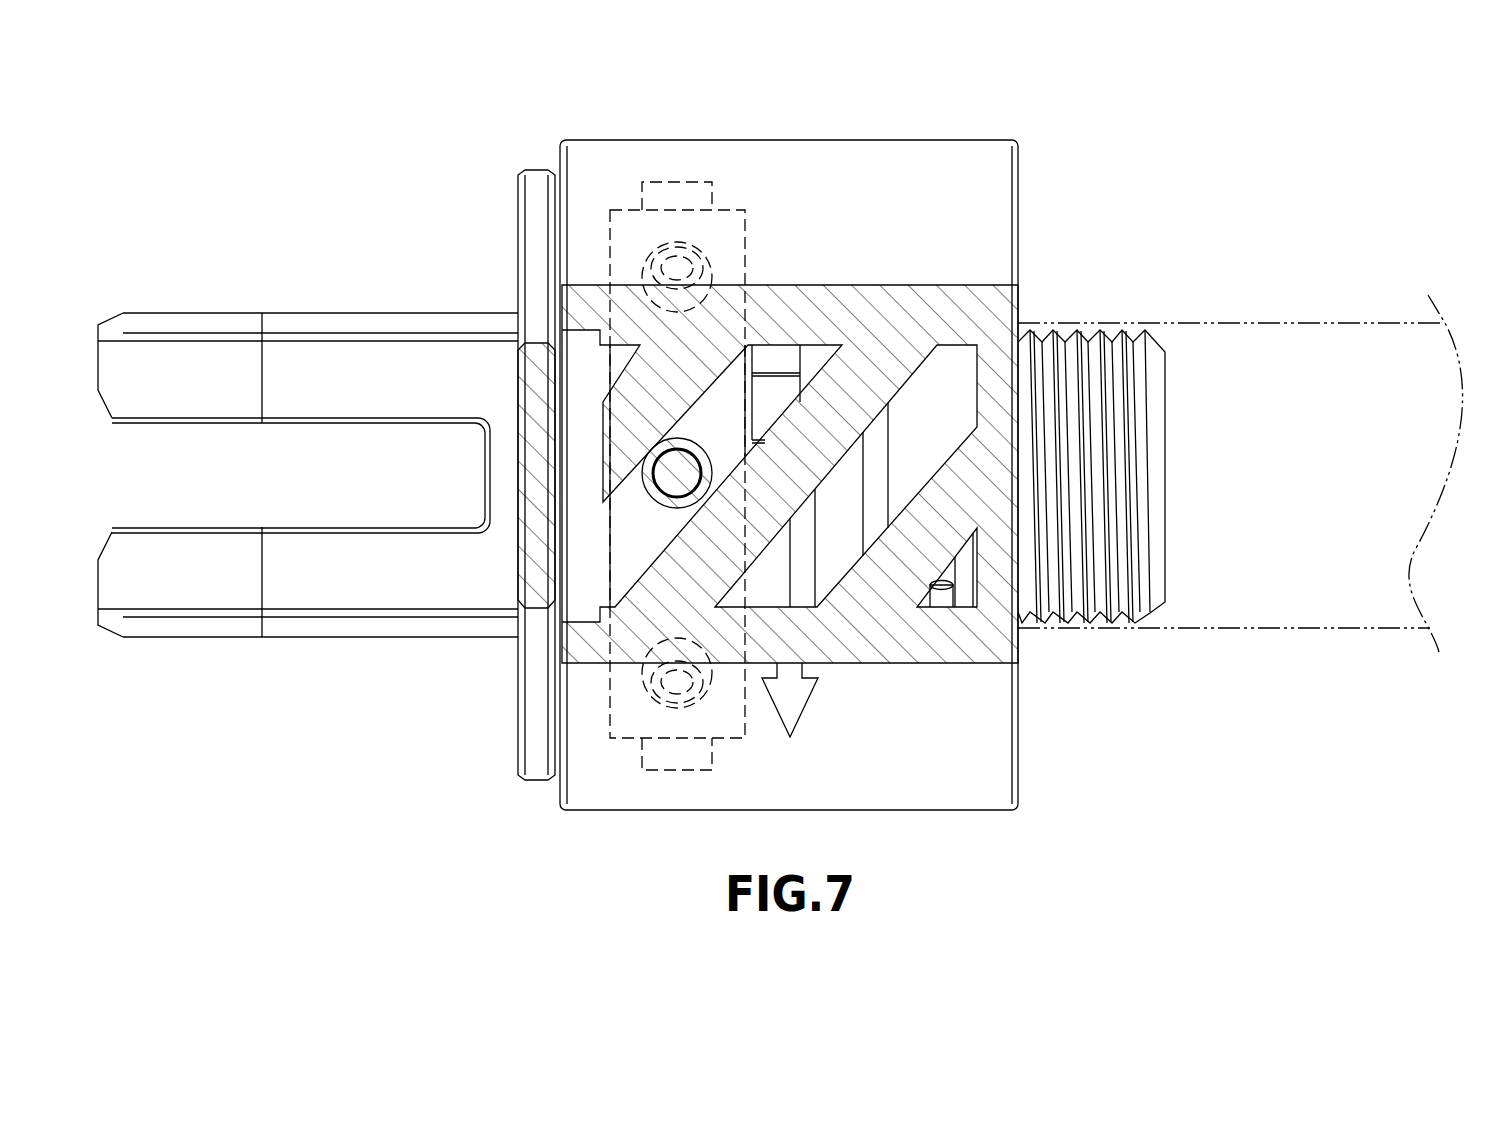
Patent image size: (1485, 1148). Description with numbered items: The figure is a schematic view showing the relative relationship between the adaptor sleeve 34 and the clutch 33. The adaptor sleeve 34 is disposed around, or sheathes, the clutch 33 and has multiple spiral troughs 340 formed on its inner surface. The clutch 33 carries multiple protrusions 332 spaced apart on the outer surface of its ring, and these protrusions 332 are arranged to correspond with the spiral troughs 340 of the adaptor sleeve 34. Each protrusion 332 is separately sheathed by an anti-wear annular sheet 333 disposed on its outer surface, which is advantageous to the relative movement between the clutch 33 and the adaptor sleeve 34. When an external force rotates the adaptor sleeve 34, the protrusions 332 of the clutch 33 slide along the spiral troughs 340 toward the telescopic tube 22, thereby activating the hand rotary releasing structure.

The telescopic tube 22 is at (1282, 342).
The clutch 33 is at (718, 228).
The adaptor sleeve 34 is at (940, 298).
The protrusions 332 is at (682, 468).
The anti-wear annular sheets 333 is at (655, 447).
The spiral troughs 340 is at (713, 387).